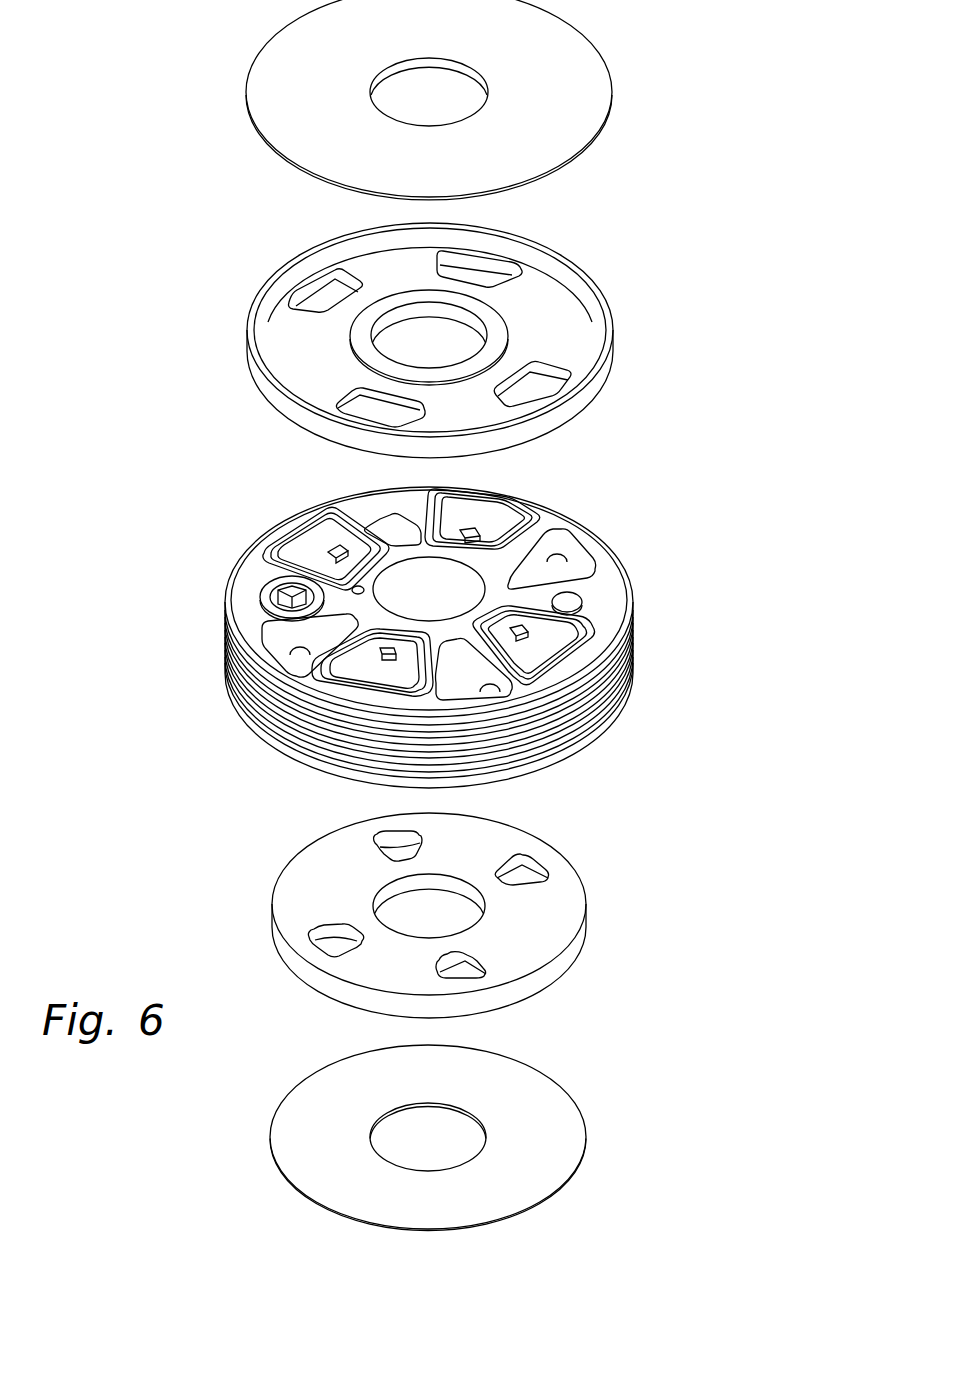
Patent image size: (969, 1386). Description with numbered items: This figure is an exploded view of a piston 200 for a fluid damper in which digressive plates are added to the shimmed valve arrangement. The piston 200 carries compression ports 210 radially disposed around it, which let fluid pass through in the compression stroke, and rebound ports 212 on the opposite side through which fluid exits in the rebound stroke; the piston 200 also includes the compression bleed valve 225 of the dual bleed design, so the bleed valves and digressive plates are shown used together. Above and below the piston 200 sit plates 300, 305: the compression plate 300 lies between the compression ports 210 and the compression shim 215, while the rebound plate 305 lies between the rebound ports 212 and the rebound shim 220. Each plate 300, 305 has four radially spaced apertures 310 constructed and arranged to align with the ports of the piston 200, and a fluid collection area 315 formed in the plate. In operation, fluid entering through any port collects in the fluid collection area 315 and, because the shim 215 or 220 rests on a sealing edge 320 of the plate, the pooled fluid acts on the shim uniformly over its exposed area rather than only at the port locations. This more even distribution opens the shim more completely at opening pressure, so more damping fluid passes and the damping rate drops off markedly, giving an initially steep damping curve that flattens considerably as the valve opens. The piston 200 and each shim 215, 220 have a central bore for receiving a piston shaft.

The compression shim 215 is at (575, 24).
The compression plate 300 is at (412, 340).
The sealing edge 320 is at (565, 263).
The fluid collection area 315 is at (292, 347).
The apertures 310 is at (310, 288).
The piston 200 is at (435, 637).
The compression ports 210 is at (315, 542).
The rebound ports 212 is at (573, 552).
The compression bleed valve 225 is at (263, 587).
The rebound plate 305 is at (555, 967).
The rebound shim 220 is at (560, 1087).